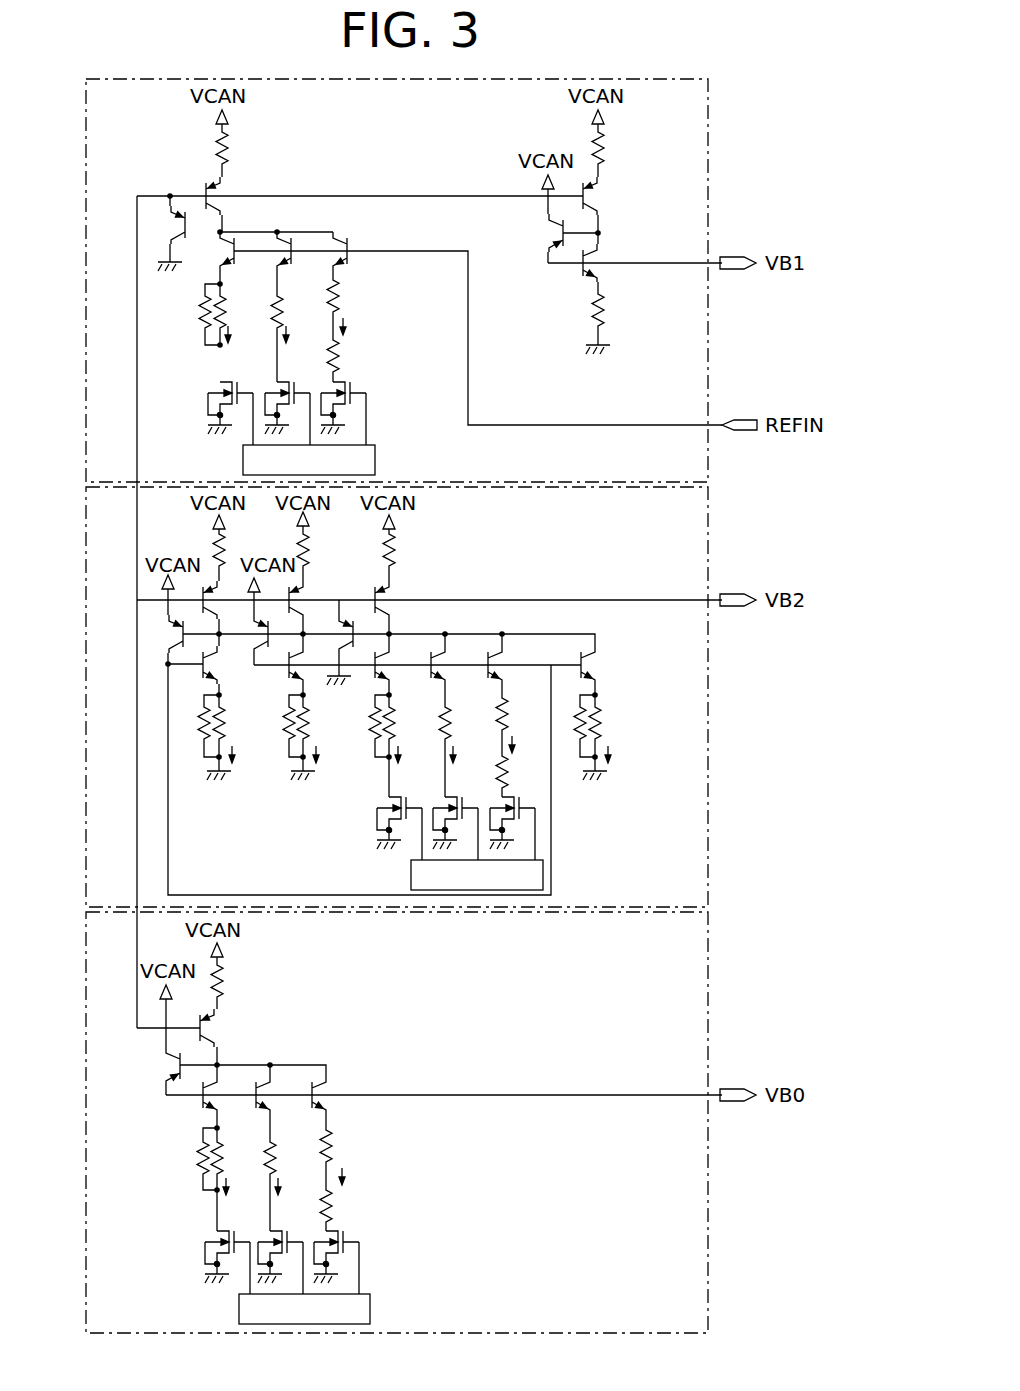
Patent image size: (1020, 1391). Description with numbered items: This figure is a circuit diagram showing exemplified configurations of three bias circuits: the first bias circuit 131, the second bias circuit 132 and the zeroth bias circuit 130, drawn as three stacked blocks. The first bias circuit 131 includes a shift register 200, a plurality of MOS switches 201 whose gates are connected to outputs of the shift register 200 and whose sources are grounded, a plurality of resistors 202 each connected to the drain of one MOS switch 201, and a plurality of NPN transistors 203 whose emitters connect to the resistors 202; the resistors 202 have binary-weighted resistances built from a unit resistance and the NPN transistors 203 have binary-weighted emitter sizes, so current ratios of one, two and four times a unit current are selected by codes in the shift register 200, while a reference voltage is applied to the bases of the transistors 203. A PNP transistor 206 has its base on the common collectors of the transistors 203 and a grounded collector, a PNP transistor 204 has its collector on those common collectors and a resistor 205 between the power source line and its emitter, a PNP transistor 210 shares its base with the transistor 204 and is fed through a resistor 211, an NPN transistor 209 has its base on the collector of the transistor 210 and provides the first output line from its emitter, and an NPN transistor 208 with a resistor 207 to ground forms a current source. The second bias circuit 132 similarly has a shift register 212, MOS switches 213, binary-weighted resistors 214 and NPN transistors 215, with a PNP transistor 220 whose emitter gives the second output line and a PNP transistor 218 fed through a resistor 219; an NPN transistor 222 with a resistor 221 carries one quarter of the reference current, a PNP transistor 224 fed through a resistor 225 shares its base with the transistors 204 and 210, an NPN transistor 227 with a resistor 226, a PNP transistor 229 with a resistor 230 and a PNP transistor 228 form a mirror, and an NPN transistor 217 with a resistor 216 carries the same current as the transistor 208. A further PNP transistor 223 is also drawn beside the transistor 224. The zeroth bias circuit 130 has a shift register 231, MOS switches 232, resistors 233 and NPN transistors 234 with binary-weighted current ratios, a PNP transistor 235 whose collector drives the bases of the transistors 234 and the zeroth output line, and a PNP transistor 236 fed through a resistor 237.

The VB0 bias circuit 130 is at (710, 968).
The VB1 bias circuit 131 is at (710, 141).
The VB2 bias circuit 132 is at (710, 553).
The shift register 200 is at (376, 462).
The MOS switches 201 is at (352, 386).
The resistors 202 is at (362, 292).
The NPN transistors 203 is at (345, 236).
The PNP transistor 204 is at (222, 193).
The resistor 205 is at (228, 136).
The PNP transistor 206 is at (178, 234).
The resistor 207 is at (610, 302).
The NPN transistor 208 is at (603, 258).
The NPN transistor 209 is at (548, 235).
The PNP transistor 210 is at (600, 198).
The resistor 211 is at (608, 135).
The shift register 212 is at (410, 877).
The MOS switches 213 is at (375, 834).
The resistors 214 is at (505, 692).
The NPN transistors 215 is at (498, 664).
The resistor 216 is at (599, 701).
The NPN transistor 217 is at (588, 666).
The PNP transistor 218 is at (386, 592).
The resistor 219 is at (398, 536).
The PNP transistor 220 is at (349, 641).
The resistor 221 is at (312, 766).
The NPN transistor 222 is at (284, 688).
The PNP transistor 223 is at (264, 641).
The PNP transistor 224 is at (300, 592).
The resistor 225 is at (312, 536).
The resistor 226 is at (227, 766).
The NPN transistor 227 is at (217, 669).
The PNP transistor 228 is at (178, 638).
The PNP transistor 229 is at (214, 586).
The resistor 230 is at (228, 536).
The shift register 231 is at (372, 1311).
The MOS switches 232 is at (352, 1230).
The resistors 233 is at (372, 1160).
The NPN transistors 234 is at (343, 1082).
The PNP transistor 235 is at (178, 1070).
The PNP transistor 236 is at (220, 1032).
The resistor 237 is at (226, 970).